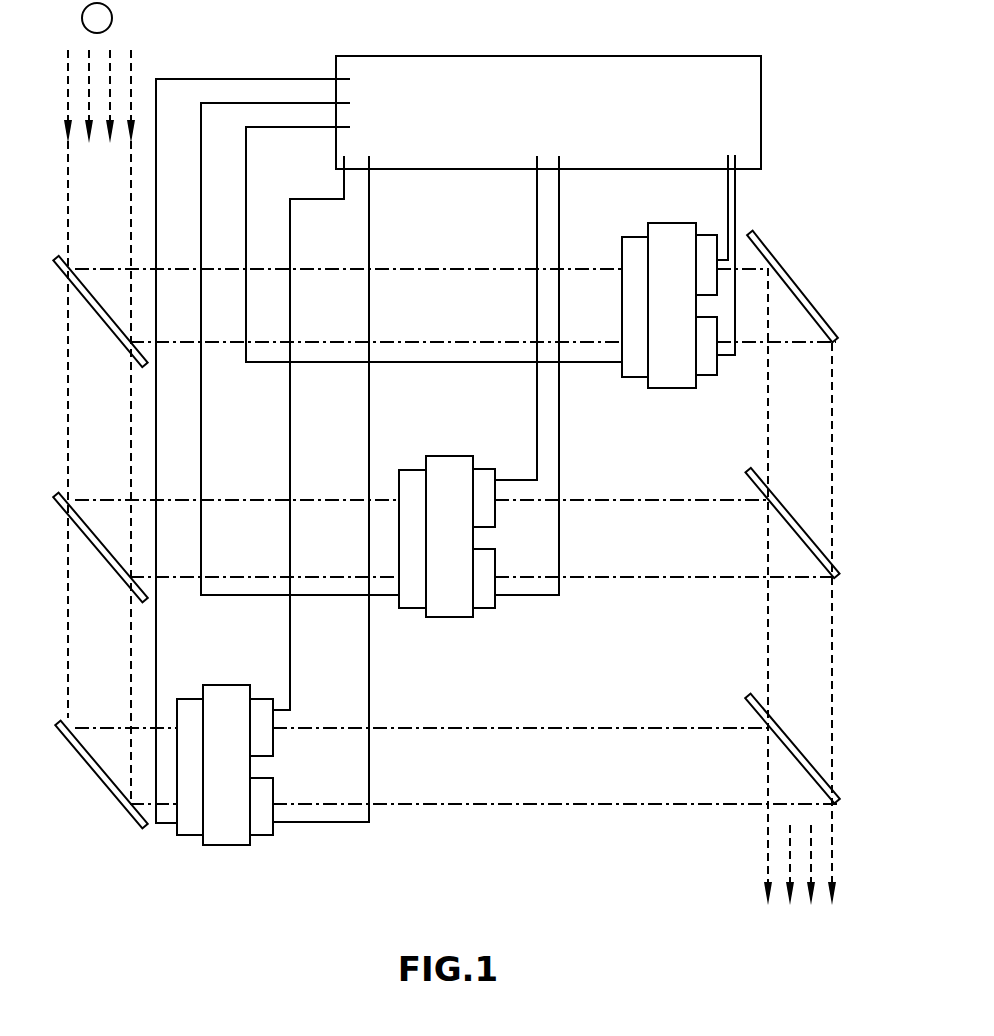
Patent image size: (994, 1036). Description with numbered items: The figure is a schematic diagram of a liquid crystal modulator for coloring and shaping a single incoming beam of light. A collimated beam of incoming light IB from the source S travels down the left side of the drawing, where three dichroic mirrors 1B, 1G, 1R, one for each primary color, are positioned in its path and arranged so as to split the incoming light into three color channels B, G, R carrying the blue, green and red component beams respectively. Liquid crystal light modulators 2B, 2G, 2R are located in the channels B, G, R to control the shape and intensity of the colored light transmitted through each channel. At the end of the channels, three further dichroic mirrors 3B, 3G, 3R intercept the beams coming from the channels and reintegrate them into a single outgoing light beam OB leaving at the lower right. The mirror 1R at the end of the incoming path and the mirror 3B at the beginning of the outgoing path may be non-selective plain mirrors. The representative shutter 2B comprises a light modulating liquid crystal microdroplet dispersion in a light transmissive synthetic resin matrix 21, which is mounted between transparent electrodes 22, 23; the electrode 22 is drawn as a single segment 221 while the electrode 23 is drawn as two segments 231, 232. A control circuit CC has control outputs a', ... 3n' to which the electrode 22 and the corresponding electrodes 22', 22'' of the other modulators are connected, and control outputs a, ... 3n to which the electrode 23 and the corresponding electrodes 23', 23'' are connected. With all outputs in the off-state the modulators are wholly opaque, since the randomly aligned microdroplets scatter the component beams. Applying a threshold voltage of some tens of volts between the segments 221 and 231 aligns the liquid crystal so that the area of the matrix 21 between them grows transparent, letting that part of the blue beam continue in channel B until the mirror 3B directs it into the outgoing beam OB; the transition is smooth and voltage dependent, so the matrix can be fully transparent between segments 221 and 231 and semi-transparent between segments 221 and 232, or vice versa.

The source S is at (97, 18).
The incoming light beam IB is at (120, 87).
The outgoing light beam OB is at (780, 843).
The control circuit CC is at (764, 102).
The blue color channel B is at (180, 297).
The green color channel G is at (180, 532).
The red color channel R is at (175, 759).
The dichroic mirror 1B is at (93, 316).
The dichroic mirror 1G is at (95, 551).
The dichroic mirror 1R is at (88, 774).
The further dichroic mirror 3B is at (805, 288).
The further dichroic mirror 3G is at (805, 515).
The further dichroic mirror 3R is at (800, 745).
The liquid crystal light modulator 2B is at (665, 320).
The liquid crystal light modulator 2G is at (472, 531).
The liquid crystal light modulator 2R is at (266, 759).
The light transmissive synthetic resin matrix 21 is at (668, 358).
The transparent electrode 22 is at (626, 345).
The electrode segment 221 is at (632, 362).
The transparent electrode 23 is at (711, 304).
The electrode segment 231 is at (703, 250).
The electrode segment 232 is at (707, 368).
The corresponding electrode 22' is at (437, 572).
The corresponding electrode 23' is at (510, 538).
The corresponding electrode 22'' is at (221, 794).
The corresponding electrode 23'' is at (302, 767).
The control output 3n is at (716, 212).
The control output 3n' is at (303, 441).
The control output a is at (348, 417).
The control output a' is at (434, 225).